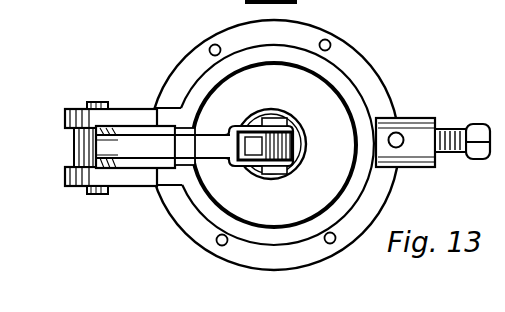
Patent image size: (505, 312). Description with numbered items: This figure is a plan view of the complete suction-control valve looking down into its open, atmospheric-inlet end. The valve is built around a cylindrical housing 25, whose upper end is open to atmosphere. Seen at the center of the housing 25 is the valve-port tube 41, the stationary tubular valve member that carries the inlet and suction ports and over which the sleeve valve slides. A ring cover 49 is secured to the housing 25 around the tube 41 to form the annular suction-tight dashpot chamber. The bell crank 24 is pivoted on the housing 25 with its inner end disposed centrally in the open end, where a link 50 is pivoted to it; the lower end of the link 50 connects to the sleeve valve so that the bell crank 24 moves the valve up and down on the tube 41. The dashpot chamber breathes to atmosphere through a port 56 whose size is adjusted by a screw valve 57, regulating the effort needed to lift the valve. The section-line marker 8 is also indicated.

The clevis / pivot shaft 8 is at (68, 145).
The bell crank 24 is at (152, 146).
The cylindrical housing 25 is at (204, 77).
The valve-port tube 41 is at (301, 122).
The ring cover 49 is at (238, 76).
The link 50 is at (292, 143).
The port 56 is at (401, 133).
The screw valve 57 is at (472, 126).